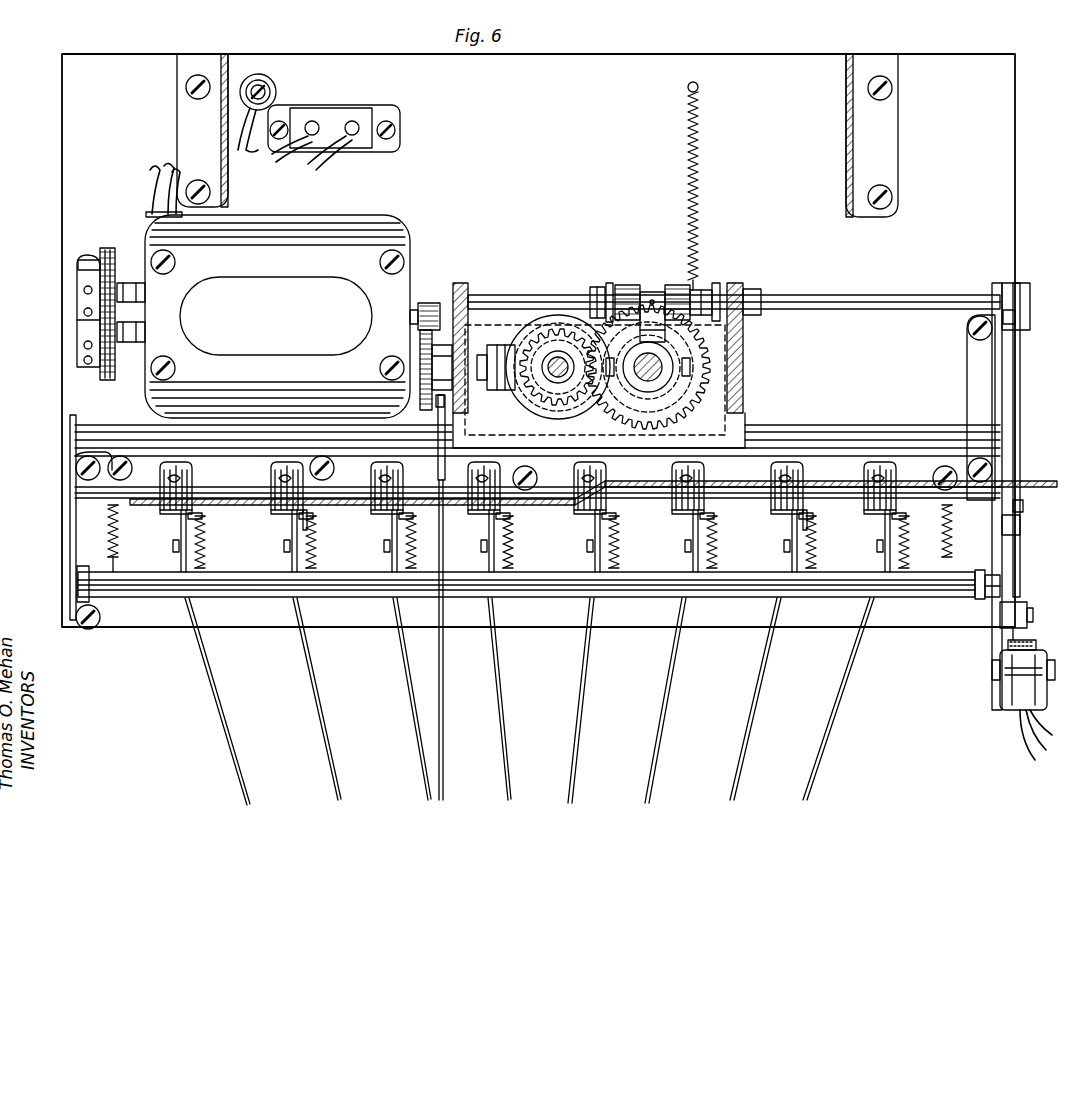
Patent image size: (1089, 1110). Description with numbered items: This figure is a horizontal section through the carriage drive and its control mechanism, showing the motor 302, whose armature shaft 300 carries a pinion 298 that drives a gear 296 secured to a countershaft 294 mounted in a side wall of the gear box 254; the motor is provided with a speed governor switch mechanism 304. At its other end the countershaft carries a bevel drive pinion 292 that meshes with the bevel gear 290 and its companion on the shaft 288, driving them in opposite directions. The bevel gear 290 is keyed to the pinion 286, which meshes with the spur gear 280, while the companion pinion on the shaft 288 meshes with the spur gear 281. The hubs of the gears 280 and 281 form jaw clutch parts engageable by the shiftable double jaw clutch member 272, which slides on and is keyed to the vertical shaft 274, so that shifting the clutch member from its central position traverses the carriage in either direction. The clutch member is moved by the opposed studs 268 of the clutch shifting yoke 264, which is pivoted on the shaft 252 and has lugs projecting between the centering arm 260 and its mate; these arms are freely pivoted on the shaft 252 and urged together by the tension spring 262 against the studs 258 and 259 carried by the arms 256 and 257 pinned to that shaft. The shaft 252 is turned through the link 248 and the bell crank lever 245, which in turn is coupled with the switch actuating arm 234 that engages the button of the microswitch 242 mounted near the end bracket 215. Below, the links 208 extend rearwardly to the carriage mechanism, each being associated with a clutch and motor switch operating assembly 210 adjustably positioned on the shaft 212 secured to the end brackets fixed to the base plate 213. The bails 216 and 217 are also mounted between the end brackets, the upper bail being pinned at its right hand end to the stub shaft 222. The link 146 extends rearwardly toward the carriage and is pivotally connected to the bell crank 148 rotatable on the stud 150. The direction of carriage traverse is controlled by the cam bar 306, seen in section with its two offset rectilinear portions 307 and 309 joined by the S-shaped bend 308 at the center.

The link 146 is at (443, 680).
The bell crank 148 is at (420, 442).
The stud 150 is at (342, 444).
The links 208 is at (204, 679).
The clutch and motor switch operating assembly 210 is at (272, 543).
The shaft 212 is at (116, 504).
The base plate 213 is at (733, 620).
The end bracket 215 is at (997, 381).
The bail 216 is at (907, 605).
The bail 217 is at (70, 545).
The stub shaft 222 is at (975, 610).
The switch actuating arm 234 is at (1025, 610).
The microswitch 242 is at (1000, 680).
The bell crank lever 245 is at (1020, 518).
The link 248 is at (1017, 400).
The shaft 252 is at (890, 296).
The gear box 254 is at (750, 298).
The arm 256 is at (720, 288).
The arm 257 is at (598, 298).
The stud 258 is at (703, 298).
The stud 259 is at (610, 286).
The centering arm 260 is at (624, 288).
The tension spring 262 is at (645, 288).
The clutch shifting yoke 264 is at (700, 362).
The studs 268 is at (648, 367).
The double jaw clutch member 272 is at (700, 340).
The vertical shaft 274 is at (704, 386).
The spur gear 280 is at (696, 401).
The spur gear 281 is at (650, 317).
The pinion 286 is at (570, 382).
The shaft 288 is at (555, 377).
The bevel gear 290 is at (544, 320).
The bevel drive pinion 292 is at (498, 380).
The countershaft 294 is at (432, 388).
The gear 296 is at (420, 352).
The pinion 298 is at (418, 308).
The armature shaft 300 is at (412, 316).
The motor 302 is at (268, 226).
The speed governor switch mechanism 304 is at (76, 260).
The cam bar 306 is at (554, 512).
The offset rectilinear portion 307 is at (313, 505).
The S-shaped bend 308 is at (615, 490).
The offset rectilinear portion 309 is at (815, 500).